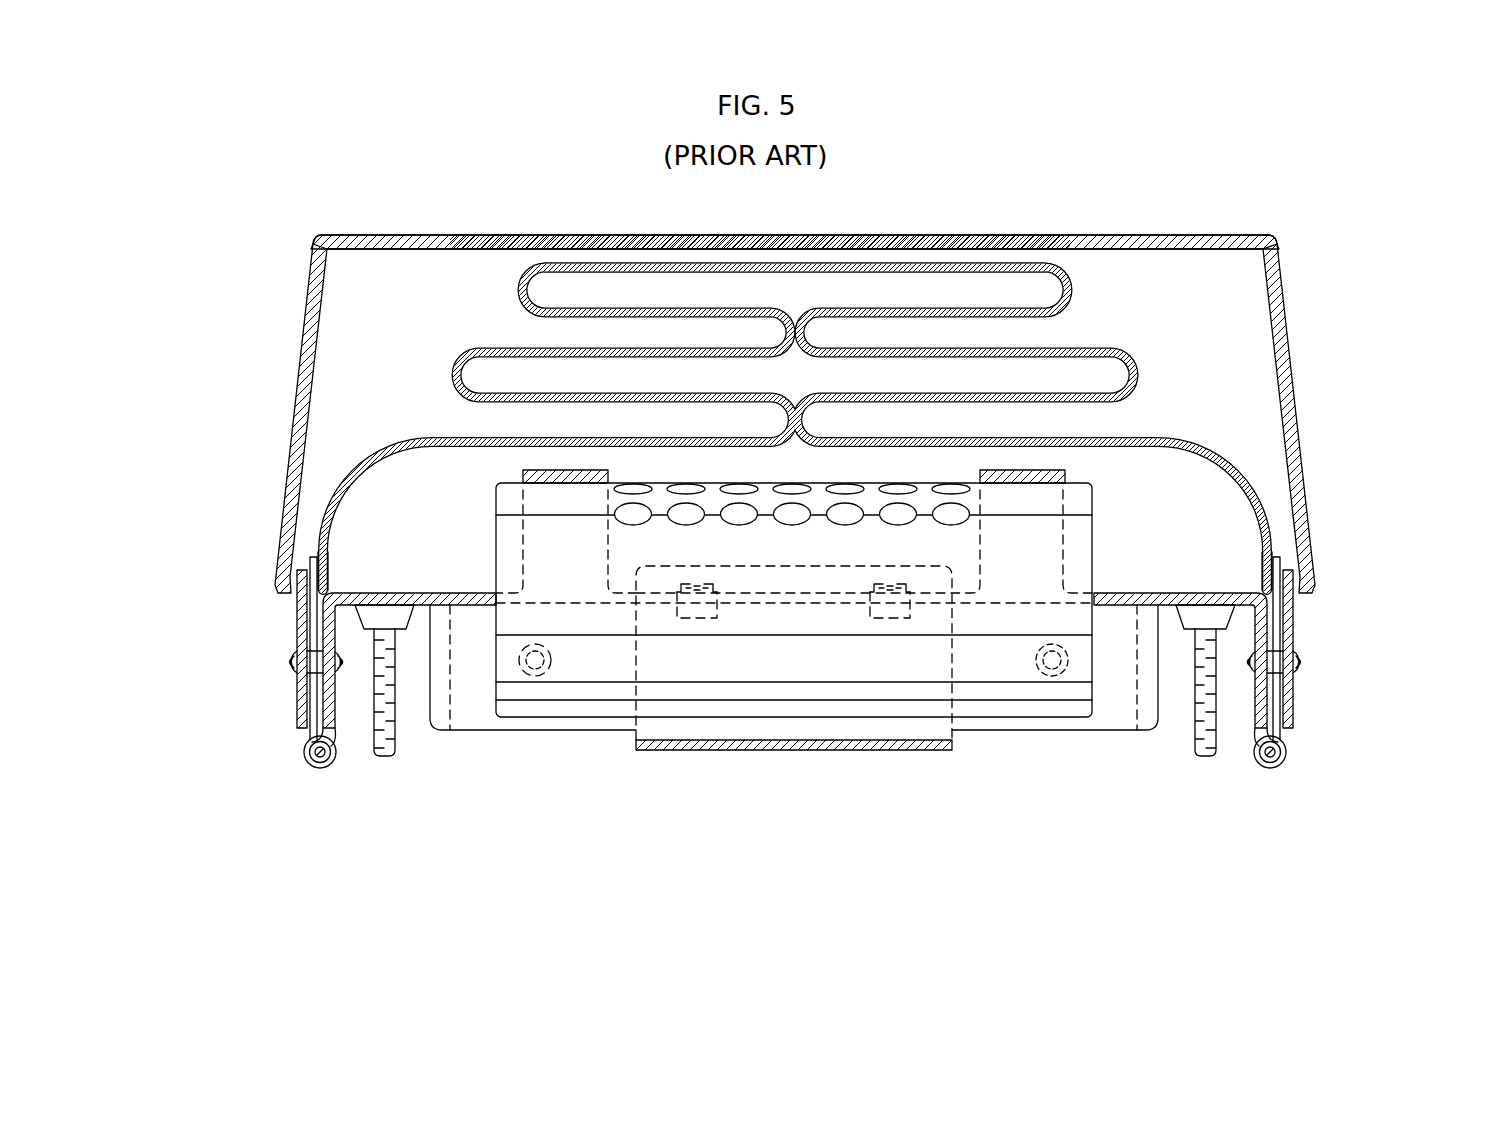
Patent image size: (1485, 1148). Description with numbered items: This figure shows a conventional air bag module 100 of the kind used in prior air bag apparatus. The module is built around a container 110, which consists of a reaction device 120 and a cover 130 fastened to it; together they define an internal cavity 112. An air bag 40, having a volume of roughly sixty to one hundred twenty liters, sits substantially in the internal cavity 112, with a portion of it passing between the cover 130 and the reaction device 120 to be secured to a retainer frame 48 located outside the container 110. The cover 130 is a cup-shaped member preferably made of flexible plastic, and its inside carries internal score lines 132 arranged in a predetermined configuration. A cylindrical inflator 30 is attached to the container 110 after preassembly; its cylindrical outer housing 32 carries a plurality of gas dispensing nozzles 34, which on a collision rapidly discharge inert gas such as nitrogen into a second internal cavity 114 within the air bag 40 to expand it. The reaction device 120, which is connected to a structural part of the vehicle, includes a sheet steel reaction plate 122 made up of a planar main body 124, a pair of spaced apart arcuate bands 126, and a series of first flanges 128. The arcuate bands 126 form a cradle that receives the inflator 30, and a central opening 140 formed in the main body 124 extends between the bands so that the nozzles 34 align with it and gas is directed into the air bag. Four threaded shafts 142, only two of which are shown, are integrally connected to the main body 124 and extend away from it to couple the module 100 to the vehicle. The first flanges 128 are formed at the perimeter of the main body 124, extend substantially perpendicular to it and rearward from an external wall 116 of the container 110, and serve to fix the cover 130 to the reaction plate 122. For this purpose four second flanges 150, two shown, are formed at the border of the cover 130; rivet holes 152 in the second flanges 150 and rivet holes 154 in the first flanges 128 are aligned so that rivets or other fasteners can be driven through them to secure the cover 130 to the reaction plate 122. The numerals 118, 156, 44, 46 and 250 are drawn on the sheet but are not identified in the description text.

The air bag module 100 is at (1302, 236).
The container 110 is at (1338, 555).
The internal cavity 112 is at (1243, 306).
The second internal cavity 114 is at (378, 514).
The external wall 116 is at (418, 607).
The bracket vertical leg 118 is at (334, 709).
The reaction device 120 is at (795, 713).
The reaction plate 122 is at (972, 729).
The planar main body 124 is at (421, 594).
The arcuate bands 126 is at (557, 470).
The first flanges 128 is at (346, 708).
The cover 130 is at (1318, 478).
The internal score lines 132 is at (906, 237).
The central opening 140 is at (807, 538).
The threaded shafts 142 is at (384, 757).
The second flanges 150 is at (298, 620).
The rivet holes 152 is at (302, 690).
The rivet holes 154 is at (535, 669).
The washer 156 is at (281, 667).
The cylindrical inflator 30 is at (994, 703).
The cylindrical outer housing 32 is at (614, 656).
The gas dispensing nozzles 34 is at (745, 512).
The air bag 40 is at (1084, 284).
The rivet pin 44 is at (318, 768).
The rivet body 46 is at (313, 764).
The retainer frame 48 is at (300, 753).
The bottom plate 250 is at (783, 758).